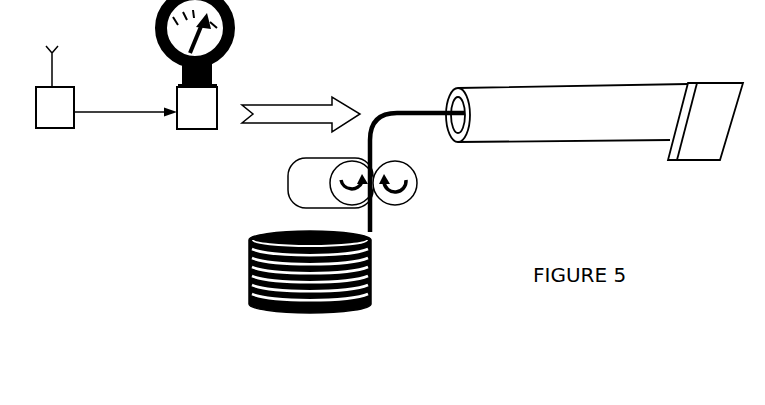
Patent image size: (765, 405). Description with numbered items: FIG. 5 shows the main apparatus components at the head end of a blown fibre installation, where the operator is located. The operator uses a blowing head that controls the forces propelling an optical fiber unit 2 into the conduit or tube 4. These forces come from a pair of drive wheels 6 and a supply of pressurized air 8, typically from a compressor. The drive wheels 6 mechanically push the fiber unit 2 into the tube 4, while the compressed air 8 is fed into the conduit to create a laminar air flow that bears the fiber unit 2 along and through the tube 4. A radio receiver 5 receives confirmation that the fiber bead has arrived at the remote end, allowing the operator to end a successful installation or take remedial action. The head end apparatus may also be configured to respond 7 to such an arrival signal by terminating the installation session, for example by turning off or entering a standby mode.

The optical fiber unit 2 is at (249, 241).
The conduit or tube 4 is at (564, 142).
The radio receiver 5 is at (55, 87).
The pair of drive wheels 6 is at (289, 176).
The response to receipt of fiber arrival signal 7 is at (121, 114).
The supply of pressurized air 8 is at (195, 64).